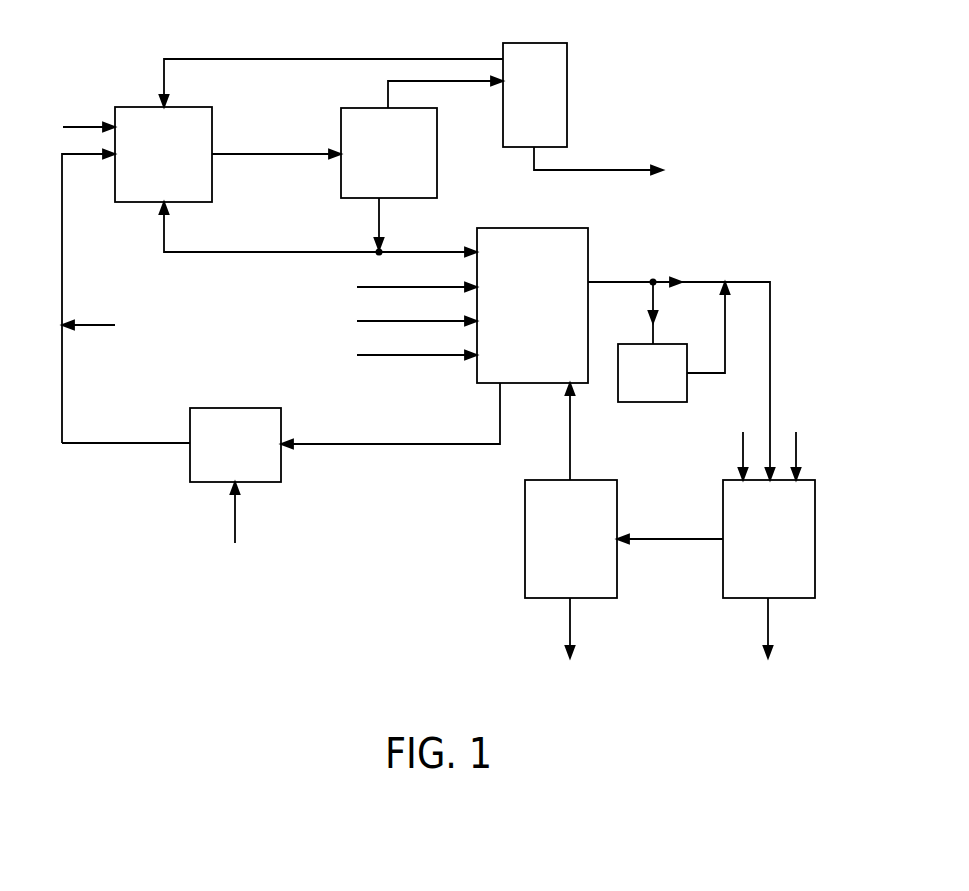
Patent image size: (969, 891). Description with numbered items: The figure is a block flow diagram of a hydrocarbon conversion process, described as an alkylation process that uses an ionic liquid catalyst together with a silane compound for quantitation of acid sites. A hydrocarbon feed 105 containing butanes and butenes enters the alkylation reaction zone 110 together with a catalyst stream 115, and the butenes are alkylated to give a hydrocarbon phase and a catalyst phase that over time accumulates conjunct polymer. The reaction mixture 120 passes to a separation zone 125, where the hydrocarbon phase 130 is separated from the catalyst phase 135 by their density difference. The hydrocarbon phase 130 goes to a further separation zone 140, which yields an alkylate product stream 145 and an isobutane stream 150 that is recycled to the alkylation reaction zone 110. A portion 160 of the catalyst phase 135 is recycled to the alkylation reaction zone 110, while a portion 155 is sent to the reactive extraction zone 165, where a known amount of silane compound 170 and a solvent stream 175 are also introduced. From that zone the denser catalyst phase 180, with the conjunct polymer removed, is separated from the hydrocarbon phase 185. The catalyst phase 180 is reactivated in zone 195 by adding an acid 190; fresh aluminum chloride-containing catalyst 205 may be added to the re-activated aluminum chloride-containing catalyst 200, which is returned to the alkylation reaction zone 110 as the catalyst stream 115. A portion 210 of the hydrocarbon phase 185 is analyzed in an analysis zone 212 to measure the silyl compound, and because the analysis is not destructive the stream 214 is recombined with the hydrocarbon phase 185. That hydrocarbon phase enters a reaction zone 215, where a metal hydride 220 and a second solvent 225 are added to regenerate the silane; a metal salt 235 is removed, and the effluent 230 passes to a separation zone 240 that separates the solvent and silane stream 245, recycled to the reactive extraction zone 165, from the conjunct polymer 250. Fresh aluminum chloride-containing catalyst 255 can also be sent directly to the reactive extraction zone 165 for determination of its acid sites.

The hydrocarbon feed 105 is at (81, 122).
The alkylation reaction zone 110 is at (196, 105).
The catalyst stream 115 is at (90, 158).
The reaction mixture 120 is at (275, 150).
The separation zone 125 is at (357, 106).
The hydrocarbon phase 130 is at (468, 83).
The catalyst phase 135 is at (377, 217).
The separation zone 140 is at (568, 93).
The alkylate product stream 145 is at (604, 166).
The isobutane stream 150 is at (334, 56).
The portion of the catalyst phase 155 is at (443, 249).
The portion of the catalyst phase 160 is at (267, 250).
The reactive extraction zone 165 is at (573, 227).
The silane compound 170 is at (375, 320).
The solvent stream 175 is at (375, 286).
The catalyst phase with the conjunct polymer removed 180 is at (499, 411).
The hydrocarbon phase 185 is at (618, 280).
The acid 190 is at (236, 517).
The zone 195 is at (237, 407).
The re-activated aluminum chloride-containing catalyst 200 is at (125, 440).
The fresh aluminum chloride-containing catalyst 205 is at (96, 325).
The portion of the hydrocarbon phase 210 is at (654, 330).
The analysis zone 212 is at (637, 403).
The stream 214 is at (726, 363).
The reaction zone 215 is at (722, 507).
The metal hydride 220 is at (797, 446).
The second solvent 225 is at (742, 449).
The effluent 230 is at (670, 543).
The metal salt 235 is at (769, 622).
The separation zone 240 is at (524, 538).
The solvent and TESi-H stream 245 is at (569, 461).
The conjunct polymer 250 is at (571, 622).
The fresh aluminum chloride-containing catalyst 255 is at (375, 354).